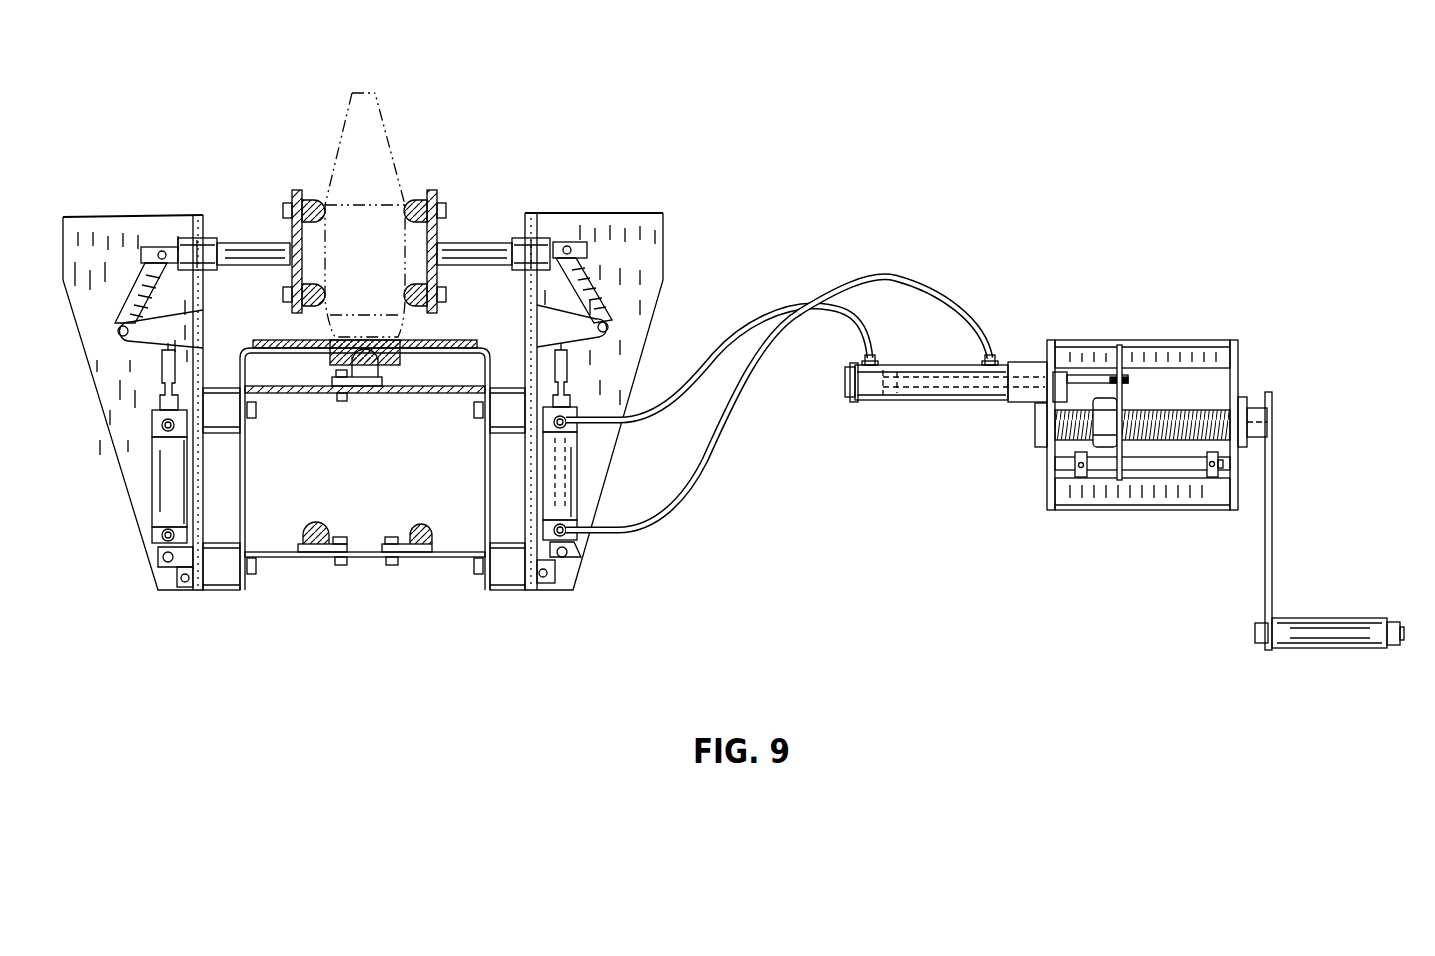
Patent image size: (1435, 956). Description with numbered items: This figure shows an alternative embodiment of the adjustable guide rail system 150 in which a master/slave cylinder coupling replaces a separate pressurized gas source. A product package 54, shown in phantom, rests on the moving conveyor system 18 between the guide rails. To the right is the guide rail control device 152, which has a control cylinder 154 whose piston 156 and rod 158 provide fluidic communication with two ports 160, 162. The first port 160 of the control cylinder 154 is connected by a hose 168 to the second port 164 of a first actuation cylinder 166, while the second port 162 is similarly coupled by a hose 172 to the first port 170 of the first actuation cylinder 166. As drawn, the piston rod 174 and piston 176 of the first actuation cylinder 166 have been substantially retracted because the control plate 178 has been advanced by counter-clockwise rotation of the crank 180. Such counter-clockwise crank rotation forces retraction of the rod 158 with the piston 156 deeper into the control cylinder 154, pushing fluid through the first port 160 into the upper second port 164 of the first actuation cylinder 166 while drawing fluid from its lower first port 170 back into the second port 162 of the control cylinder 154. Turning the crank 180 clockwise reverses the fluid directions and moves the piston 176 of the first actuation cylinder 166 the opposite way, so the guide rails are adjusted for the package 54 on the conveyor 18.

The moving conveyor system 18 is at (393, 366).
The product package 54 is at (397, 143).
The adjustable guide rail system 150 is at (1095, 92).
The guide rail control device 152 is at (1267, 344).
The control cylinder 154 is at (1028, 362).
The piston 156 is at (893, 398).
The rod 158 is at (923, 404).
The first port 160 is at (877, 362).
The second port 162 is at (1015, 362).
The second port 164 is at (575, 397).
The first actuation cylinder 166 is at (577, 450).
The hose 168 is at (843, 278).
The first port 170 is at (568, 557).
The hose 172 is at (708, 487).
The piston rod 174 is at (567, 478).
The piston 176 is at (590, 543).
The control plate 178 is at (1120, 347).
The crank 180 is at (1313, 583).